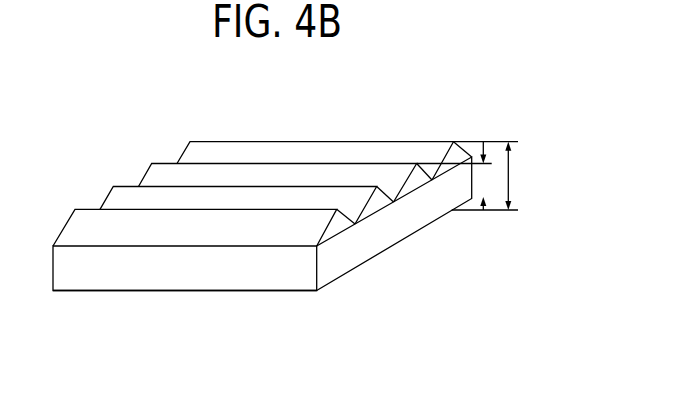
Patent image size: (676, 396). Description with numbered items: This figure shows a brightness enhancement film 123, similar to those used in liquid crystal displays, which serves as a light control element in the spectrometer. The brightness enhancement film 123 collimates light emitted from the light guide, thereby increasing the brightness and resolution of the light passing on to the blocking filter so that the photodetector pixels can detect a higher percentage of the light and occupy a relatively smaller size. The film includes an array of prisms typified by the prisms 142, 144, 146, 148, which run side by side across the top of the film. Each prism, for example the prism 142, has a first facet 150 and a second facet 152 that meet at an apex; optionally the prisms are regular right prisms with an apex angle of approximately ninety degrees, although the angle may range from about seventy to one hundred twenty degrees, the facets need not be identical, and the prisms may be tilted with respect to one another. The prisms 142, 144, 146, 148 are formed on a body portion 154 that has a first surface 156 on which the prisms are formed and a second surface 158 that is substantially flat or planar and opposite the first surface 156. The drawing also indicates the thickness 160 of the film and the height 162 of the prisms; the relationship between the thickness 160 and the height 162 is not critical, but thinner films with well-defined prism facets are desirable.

The brightness enhancement film 123 is at (371, 83).
The prism 142 is at (75, 209).
The prism 144 is at (113, 186).
The prism 146 is at (152, 164).
The prism 148 is at (190, 142).
The first facet 150 is at (300, 232).
The second facet 152 is at (348, 211).
The body portion 154 is at (424, 222).
The first surface 156 is at (380, 209).
The second surface 158 is at (161, 299).
The thickness 160 is at (512, 179).
The height 162 is at (458, 176).